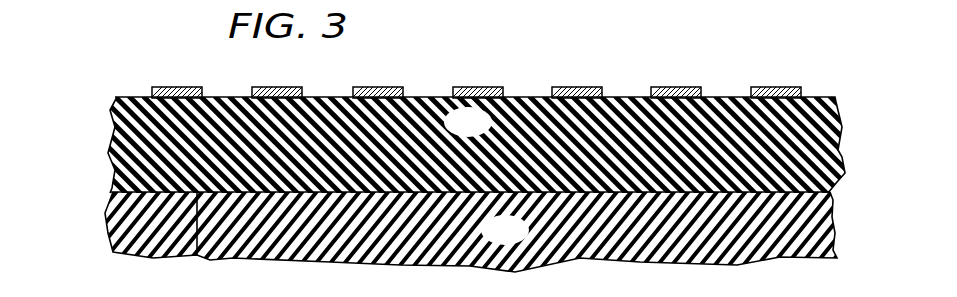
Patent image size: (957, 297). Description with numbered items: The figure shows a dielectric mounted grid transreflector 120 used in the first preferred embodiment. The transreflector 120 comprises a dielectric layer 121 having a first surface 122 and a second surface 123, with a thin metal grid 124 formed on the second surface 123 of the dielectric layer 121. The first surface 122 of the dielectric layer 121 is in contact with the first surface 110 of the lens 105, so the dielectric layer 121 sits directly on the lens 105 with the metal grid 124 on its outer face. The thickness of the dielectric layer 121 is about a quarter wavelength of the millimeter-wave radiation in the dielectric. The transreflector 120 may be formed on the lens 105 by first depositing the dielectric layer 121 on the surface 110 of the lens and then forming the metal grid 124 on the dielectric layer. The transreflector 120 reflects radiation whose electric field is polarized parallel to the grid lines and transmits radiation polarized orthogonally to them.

The transreflector 120 is at (90, 68).
The dielectric layer 121 is at (484, 134).
The lens 105 is at (521, 242).
The first surface 122 is at (838, 178).
The second surface 123 is at (826, 100).
The thin metal grid 124 is at (801, 82).
The first surface of lens 110 is at (197, 257).